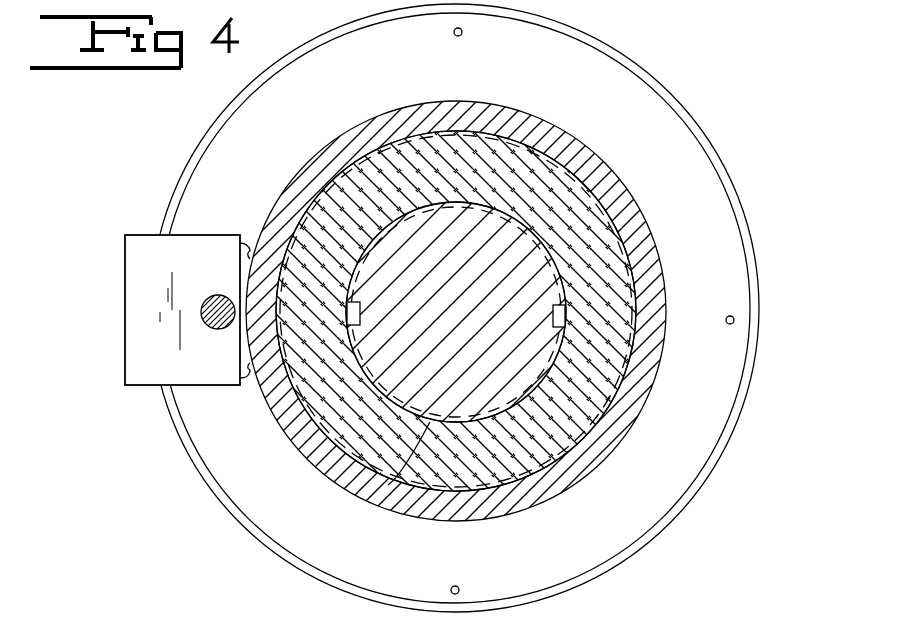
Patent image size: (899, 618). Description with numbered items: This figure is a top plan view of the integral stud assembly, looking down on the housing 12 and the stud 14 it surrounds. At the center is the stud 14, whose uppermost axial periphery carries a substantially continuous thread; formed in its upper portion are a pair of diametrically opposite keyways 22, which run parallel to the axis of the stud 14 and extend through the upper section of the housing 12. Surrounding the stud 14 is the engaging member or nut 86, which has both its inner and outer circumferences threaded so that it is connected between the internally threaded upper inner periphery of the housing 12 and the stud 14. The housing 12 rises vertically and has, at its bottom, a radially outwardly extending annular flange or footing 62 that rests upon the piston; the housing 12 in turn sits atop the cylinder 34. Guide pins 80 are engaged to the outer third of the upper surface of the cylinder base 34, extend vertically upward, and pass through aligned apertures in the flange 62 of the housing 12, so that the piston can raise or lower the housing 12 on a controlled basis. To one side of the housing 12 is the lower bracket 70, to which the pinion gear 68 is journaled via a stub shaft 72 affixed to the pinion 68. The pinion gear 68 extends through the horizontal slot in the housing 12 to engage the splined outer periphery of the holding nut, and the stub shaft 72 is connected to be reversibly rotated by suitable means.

The housing 12 is at (318, 152).
The stud 14 is at (388, 485).
The keyways 22 is at (360, 313).
The cylinder 34 is at (717, 157).
The annular flange 62 is at (632, 552).
The pinion gear 68 is at (250, 392).
The lower bracket 70 is at (125, 363).
The stub shaft 72 is at (201, 308).
The guide pins 80 is at (462, 34).
The nut 86 is at (550, 187).